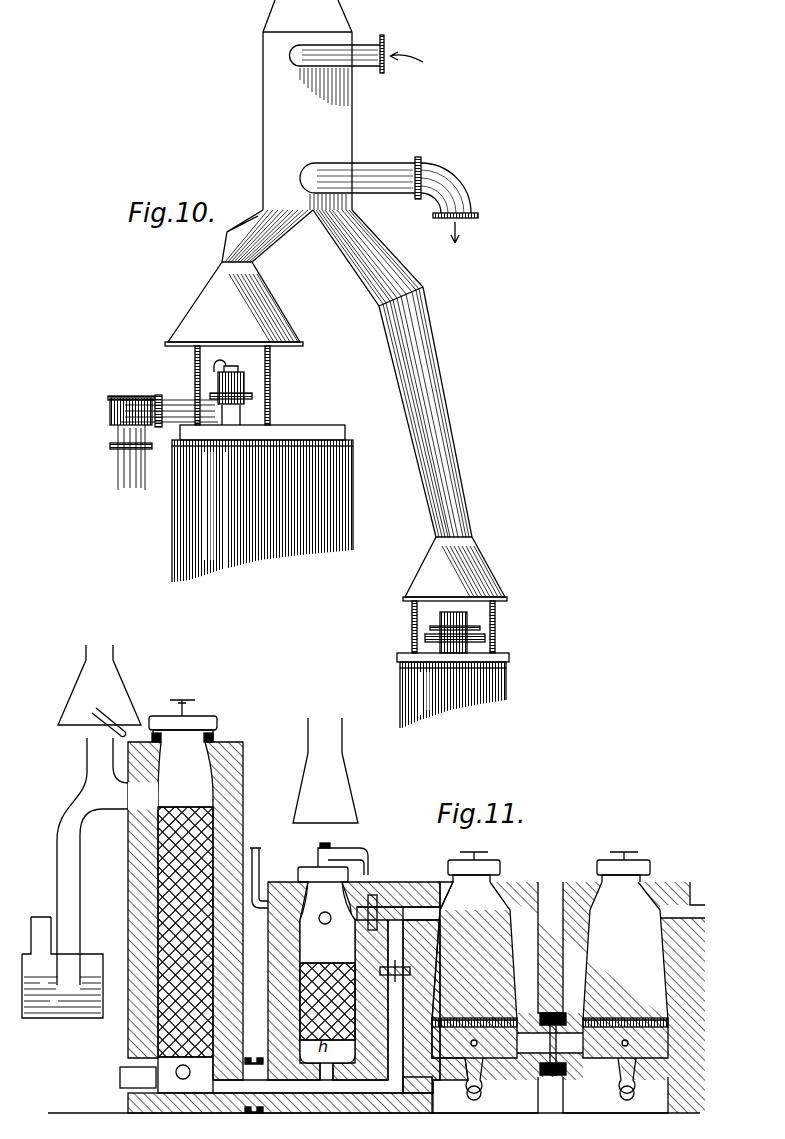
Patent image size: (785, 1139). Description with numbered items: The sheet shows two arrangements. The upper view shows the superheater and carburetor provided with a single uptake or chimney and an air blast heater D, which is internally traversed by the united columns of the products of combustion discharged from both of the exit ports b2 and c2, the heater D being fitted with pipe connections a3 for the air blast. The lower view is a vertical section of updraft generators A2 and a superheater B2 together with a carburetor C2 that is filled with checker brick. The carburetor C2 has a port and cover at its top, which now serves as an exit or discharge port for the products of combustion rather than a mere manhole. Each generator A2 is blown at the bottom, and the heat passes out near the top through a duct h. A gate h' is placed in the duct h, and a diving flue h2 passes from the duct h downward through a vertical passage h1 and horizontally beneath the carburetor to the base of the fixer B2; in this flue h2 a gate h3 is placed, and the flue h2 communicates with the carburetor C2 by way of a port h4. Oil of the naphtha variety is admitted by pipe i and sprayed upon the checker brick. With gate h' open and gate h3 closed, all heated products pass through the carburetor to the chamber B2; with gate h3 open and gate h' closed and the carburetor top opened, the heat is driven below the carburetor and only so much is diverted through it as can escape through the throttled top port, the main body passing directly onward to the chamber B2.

In FIG. 10, the air blast heater D is at (307, 105).
In FIG. 10, the pipe a3 is at (357, 43).
In FIG. 10, the vessel B is at (205, 497).
In FIG. 10, the exit port b2 is at (252, 397).
In FIG. 10, the vessel C is at (403, 686).
In FIG. 10, the exit port c2 is at (483, 648).
In FIG. 11, the superheater B2 is at (243, 805).
In FIG. 11, the pipe i is at (259, 876).
In FIG. 11, the carburetor C2 is at (354, 968).
In FIG. 11, the gate h' is at (389, 890).
In FIG. 11, the duct h is at (398, 916).
In FIG. 11, the vertical passage h1 is at (396, 1006).
In FIG. 11, the diving flue h2 is at (326, 1006).
In FIG. 11, the gate h3 is at (326, 1076).
In FIG. 11, the port h4 is at (395, 963).
In FIG. 11, the generator A2 is at (554, 982).